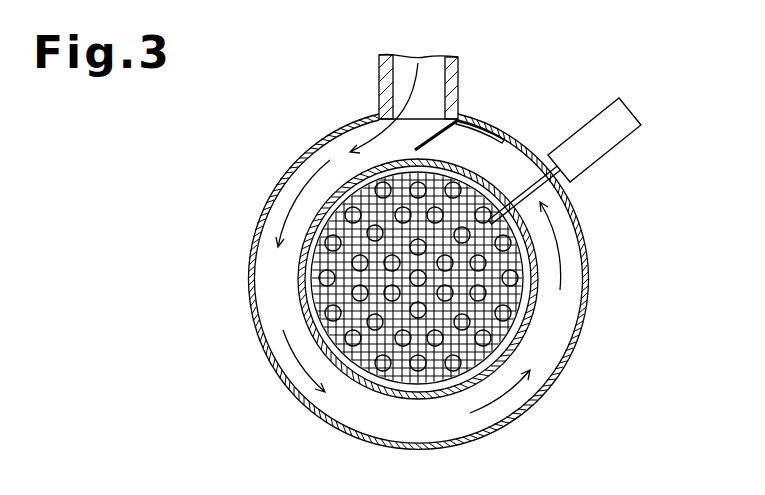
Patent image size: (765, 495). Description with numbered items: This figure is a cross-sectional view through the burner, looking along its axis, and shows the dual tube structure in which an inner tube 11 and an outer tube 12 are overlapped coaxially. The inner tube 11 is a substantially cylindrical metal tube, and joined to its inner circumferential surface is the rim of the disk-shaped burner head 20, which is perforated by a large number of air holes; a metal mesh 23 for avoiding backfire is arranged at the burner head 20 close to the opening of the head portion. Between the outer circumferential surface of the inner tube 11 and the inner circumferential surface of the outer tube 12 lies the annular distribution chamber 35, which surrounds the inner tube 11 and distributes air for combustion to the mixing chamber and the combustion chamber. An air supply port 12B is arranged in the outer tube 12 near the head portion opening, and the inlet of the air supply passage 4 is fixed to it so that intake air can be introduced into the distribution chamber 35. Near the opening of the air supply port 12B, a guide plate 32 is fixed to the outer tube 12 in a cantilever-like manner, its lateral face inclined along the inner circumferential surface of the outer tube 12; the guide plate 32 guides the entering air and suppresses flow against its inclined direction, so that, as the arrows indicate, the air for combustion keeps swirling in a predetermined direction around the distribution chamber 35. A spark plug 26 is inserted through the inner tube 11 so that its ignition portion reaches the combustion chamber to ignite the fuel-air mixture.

The air supply passage 4 is at (458, 66).
The air supply port 12B is at (458, 106).
The guide plate 32 is at (466, 118).
The spark plug 26 is at (583, 122).
The outer tube 12 is at (578, 214).
The inner tube 11 is at (545, 300).
The distribution chamber 35 is at (557, 362).
The burner head 20 is at (358, 387).
The metal mesh 23 is at (415, 396).